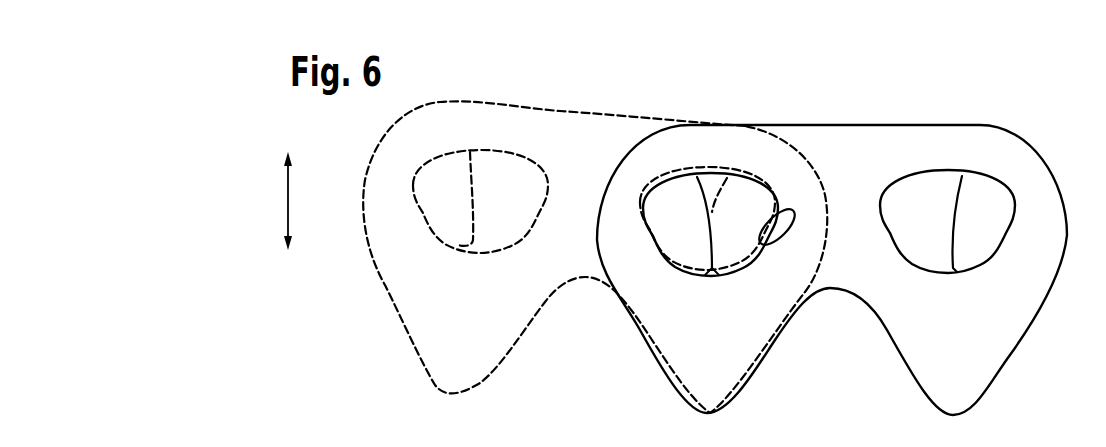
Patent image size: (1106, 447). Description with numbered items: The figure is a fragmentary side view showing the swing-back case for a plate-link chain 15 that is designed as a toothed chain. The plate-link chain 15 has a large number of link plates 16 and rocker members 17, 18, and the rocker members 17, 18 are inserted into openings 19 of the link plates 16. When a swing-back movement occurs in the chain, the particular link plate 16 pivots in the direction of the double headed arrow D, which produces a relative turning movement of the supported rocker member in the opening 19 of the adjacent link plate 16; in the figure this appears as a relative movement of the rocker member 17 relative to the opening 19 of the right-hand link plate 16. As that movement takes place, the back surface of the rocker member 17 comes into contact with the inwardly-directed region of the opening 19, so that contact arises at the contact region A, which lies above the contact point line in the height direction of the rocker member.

The plate-link chain 15 is at (1020, 117).
The link plate 16 is at (968, 138).
The rocker member 17 is at (755, 170).
The rocker member 18 is at (680, 197).
The opening 19 is at (920, 187).
The contact region A is at (788, 232).
The double headed arrow D is at (298, 201).